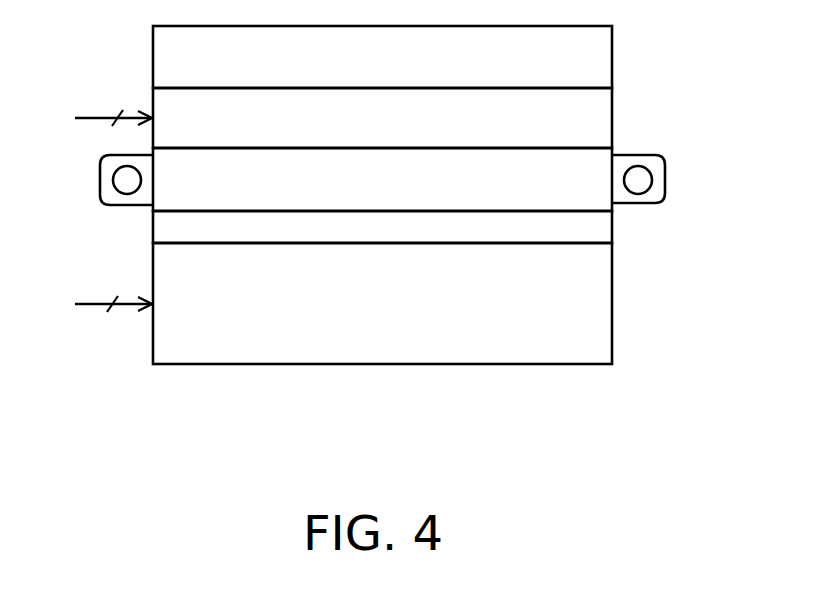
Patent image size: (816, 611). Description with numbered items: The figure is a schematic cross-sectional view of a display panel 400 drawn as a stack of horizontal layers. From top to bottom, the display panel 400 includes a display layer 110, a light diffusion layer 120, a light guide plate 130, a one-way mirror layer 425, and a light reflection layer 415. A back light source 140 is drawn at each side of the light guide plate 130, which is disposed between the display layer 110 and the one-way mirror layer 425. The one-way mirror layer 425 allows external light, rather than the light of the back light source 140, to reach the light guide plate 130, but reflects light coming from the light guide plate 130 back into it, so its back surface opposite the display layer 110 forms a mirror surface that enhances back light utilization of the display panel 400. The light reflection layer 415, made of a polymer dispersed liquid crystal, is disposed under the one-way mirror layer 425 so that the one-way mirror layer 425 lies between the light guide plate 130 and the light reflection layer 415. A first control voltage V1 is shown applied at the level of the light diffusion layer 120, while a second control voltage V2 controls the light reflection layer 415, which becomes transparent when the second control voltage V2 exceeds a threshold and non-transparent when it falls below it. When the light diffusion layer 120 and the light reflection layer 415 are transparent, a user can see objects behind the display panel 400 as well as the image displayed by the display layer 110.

The display panel 400 is at (383, 234).
The display layer 110 is at (585, 57).
The light diffusion layer 120 is at (585, 120).
The light guide plate 130 is at (191, 199).
The one-way mirror layer 425 is at (585, 229).
The light reflection layer 415 is at (585, 308).
The back light source 140 is at (127, 180).
The first control voltage V1 is at (94, 120).
The second control voltage V2 is at (94, 306).